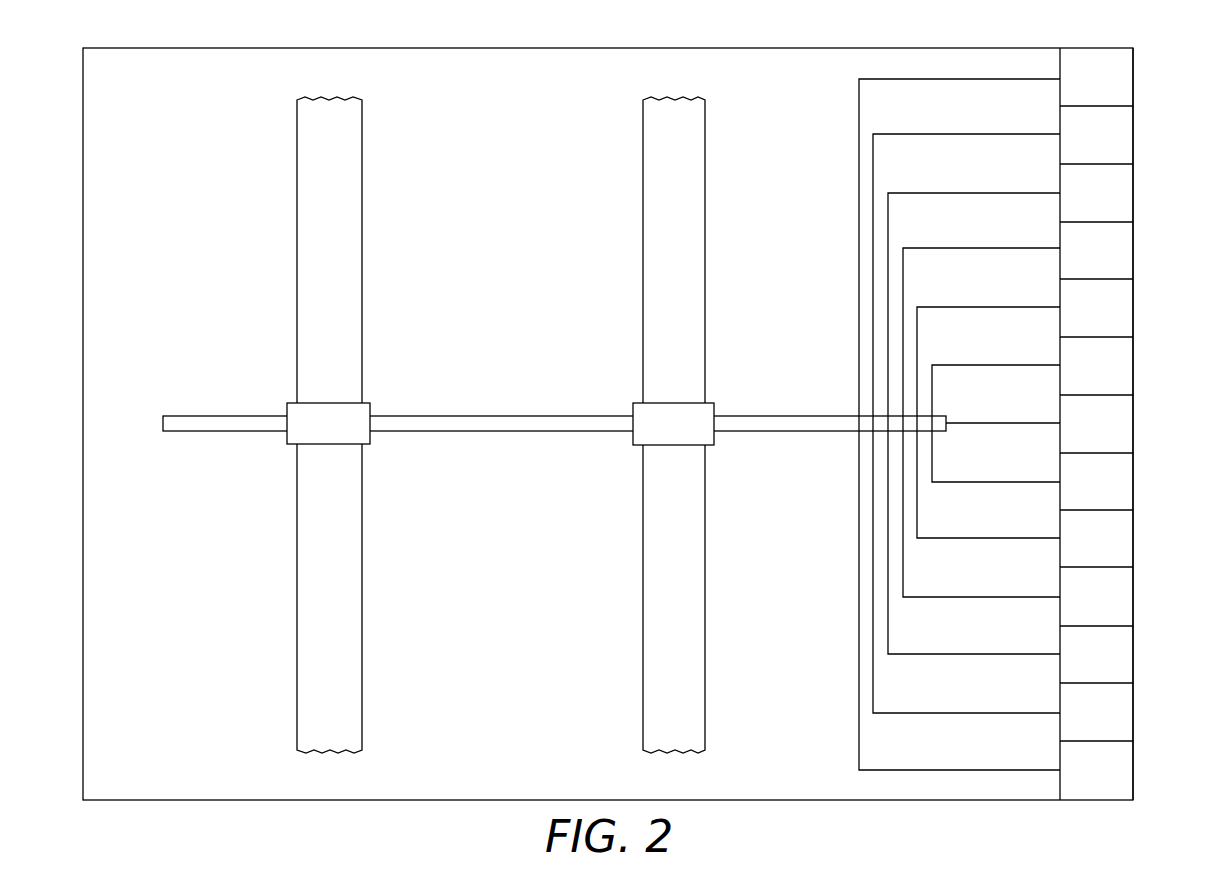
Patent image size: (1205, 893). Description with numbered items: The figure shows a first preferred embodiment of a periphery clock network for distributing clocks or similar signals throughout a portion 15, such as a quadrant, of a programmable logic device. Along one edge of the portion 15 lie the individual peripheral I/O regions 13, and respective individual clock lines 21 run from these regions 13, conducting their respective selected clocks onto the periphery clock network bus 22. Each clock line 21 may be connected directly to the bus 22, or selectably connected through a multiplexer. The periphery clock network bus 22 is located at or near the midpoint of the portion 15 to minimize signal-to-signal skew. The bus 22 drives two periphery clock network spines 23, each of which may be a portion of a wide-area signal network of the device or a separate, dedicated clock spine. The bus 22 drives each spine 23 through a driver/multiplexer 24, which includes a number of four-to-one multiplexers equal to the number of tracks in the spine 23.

The peripheral I/O region 13 is at (1133, 87).
The portion of PLD 15 is at (608, 47).
The individual clock line 21 is at (1040, 80).
The periphery clock network bus 22 is at (197, 415).
The periphery clock network spine 23 is at (362, 233).
The driver/multiplexer 24 is at (372, 409).